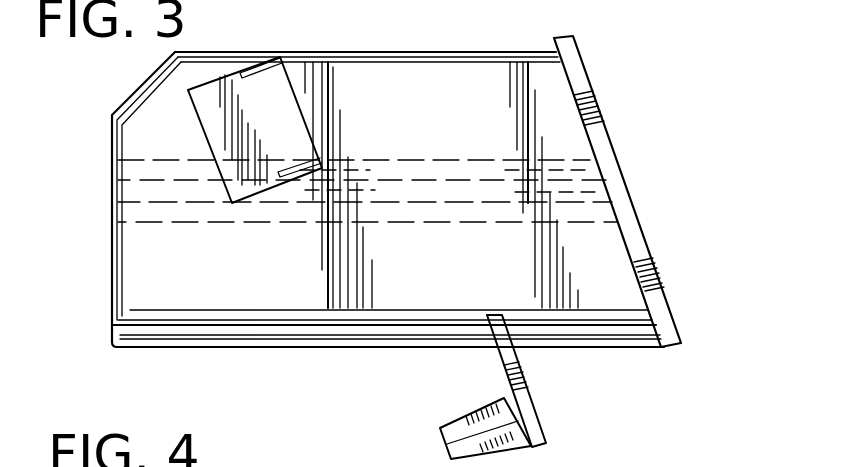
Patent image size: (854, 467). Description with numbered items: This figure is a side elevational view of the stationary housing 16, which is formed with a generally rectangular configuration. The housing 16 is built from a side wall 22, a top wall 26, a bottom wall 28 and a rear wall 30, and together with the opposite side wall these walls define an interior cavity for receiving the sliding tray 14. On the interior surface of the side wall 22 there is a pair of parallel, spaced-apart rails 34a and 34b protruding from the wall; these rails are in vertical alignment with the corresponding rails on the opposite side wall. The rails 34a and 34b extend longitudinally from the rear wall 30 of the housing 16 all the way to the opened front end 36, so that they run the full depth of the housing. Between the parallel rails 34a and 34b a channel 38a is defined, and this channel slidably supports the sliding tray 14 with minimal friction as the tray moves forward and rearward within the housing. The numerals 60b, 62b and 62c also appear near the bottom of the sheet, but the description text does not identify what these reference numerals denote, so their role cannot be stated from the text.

In FIG. 3, the stationary housing 16 is at (102, 267).
In FIG. 4, the stationary housing 16 is at (410, 461).
In FIG. 3, the side wall 22 is at (238, 277).
In FIG. 3, the top wall 26 is at (407, 52).
In FIG. 3, the bottom wall 28 is at (267, 348).
In FIG. 3, the rear wall 30 is at (112, 150).
In FIG. 3, the rail 34a is at (400, 160).
In FIG. 3, the rail 34b is at (393, 222).
In FIG. 3, the opened front end 36 is at (648, 252).
In FIG. 3, the channel 38a is at (592, 193).
In FIG. 4, the fastener 60b is at (239, 453).
In FIG. 4, the fastener 62b is at (313, 461).
In FIG. 4, the fastener 62c is at (565, 461).
In FIG. 4, the sliding tray 14 is at (619, 466).